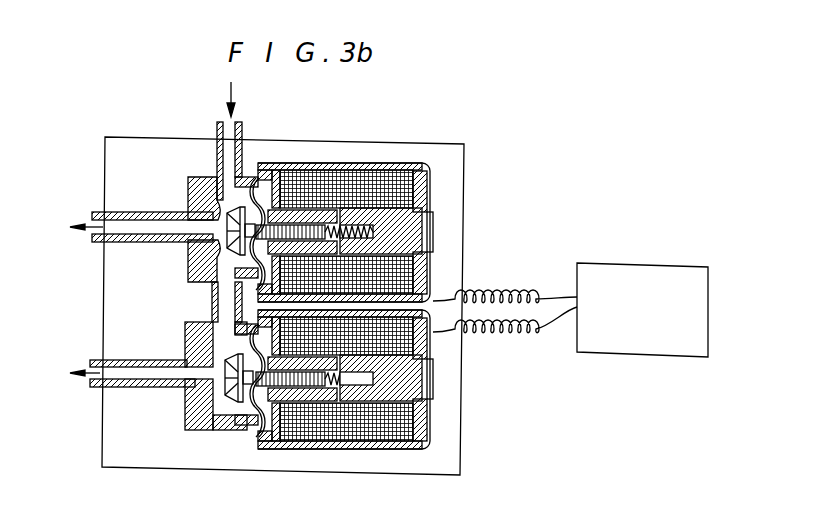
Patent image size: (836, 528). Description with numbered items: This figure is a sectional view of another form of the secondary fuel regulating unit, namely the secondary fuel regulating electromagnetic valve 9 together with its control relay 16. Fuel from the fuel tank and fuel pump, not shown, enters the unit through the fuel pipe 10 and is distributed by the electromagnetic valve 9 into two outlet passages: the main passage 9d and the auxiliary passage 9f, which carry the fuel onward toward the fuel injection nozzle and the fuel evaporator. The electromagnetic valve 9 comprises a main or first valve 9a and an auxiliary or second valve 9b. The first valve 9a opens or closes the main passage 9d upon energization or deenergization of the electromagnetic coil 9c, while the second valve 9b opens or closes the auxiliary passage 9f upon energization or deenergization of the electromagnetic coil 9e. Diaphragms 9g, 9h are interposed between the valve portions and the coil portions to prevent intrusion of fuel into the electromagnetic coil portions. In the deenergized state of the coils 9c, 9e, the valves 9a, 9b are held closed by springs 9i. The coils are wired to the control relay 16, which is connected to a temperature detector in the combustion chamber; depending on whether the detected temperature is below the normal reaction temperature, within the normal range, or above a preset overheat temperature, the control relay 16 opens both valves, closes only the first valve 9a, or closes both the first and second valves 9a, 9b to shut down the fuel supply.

The secondary fuel regulating electromagnetic valve 9 is at (344, 142).
The first valve 9a is at (188, 197).
The second valve 9b is at (223, 402).
The electromagnetic coil 9c is at (430, 185).
The main passage 9d is at (133, 243).
The electromagnetic coil 9e is at (420, 428).
The auxiliary passage 9f is at (121, 386).
The diaphragm 9g is at (252, 177).
The diaphragm 9h is at (249, 426).
The spring 9i is at (384, 233).
The fuel pipe 10 is at (216, 132).
The control relay 16 is at (625, 263).